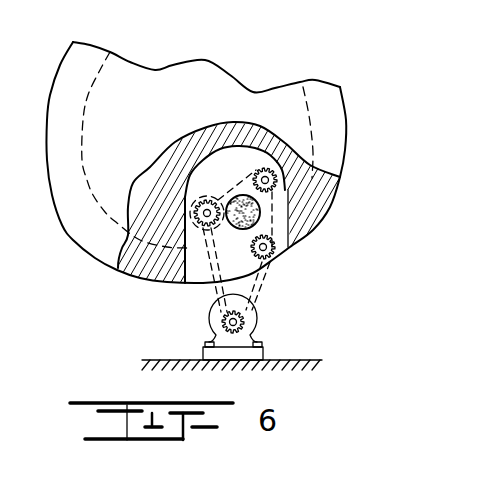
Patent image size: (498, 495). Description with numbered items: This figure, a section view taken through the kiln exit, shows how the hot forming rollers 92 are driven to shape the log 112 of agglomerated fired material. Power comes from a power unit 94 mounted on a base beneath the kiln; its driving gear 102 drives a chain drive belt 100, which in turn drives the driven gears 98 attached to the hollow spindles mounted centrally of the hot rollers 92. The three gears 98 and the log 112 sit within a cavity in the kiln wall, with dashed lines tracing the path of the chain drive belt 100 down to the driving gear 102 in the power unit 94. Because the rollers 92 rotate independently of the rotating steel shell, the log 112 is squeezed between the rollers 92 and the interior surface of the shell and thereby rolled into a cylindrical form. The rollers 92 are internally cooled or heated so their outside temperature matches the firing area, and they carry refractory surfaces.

The hot rollers 92 is at (183, 197).
The power unit 94 is at (256, 319).
The gears 98 is at (256, 177).
The chain drive belt 100 is at (258, 292).
The driving gear 102 is at (221, 323).
The log 112 is at (236, 229).